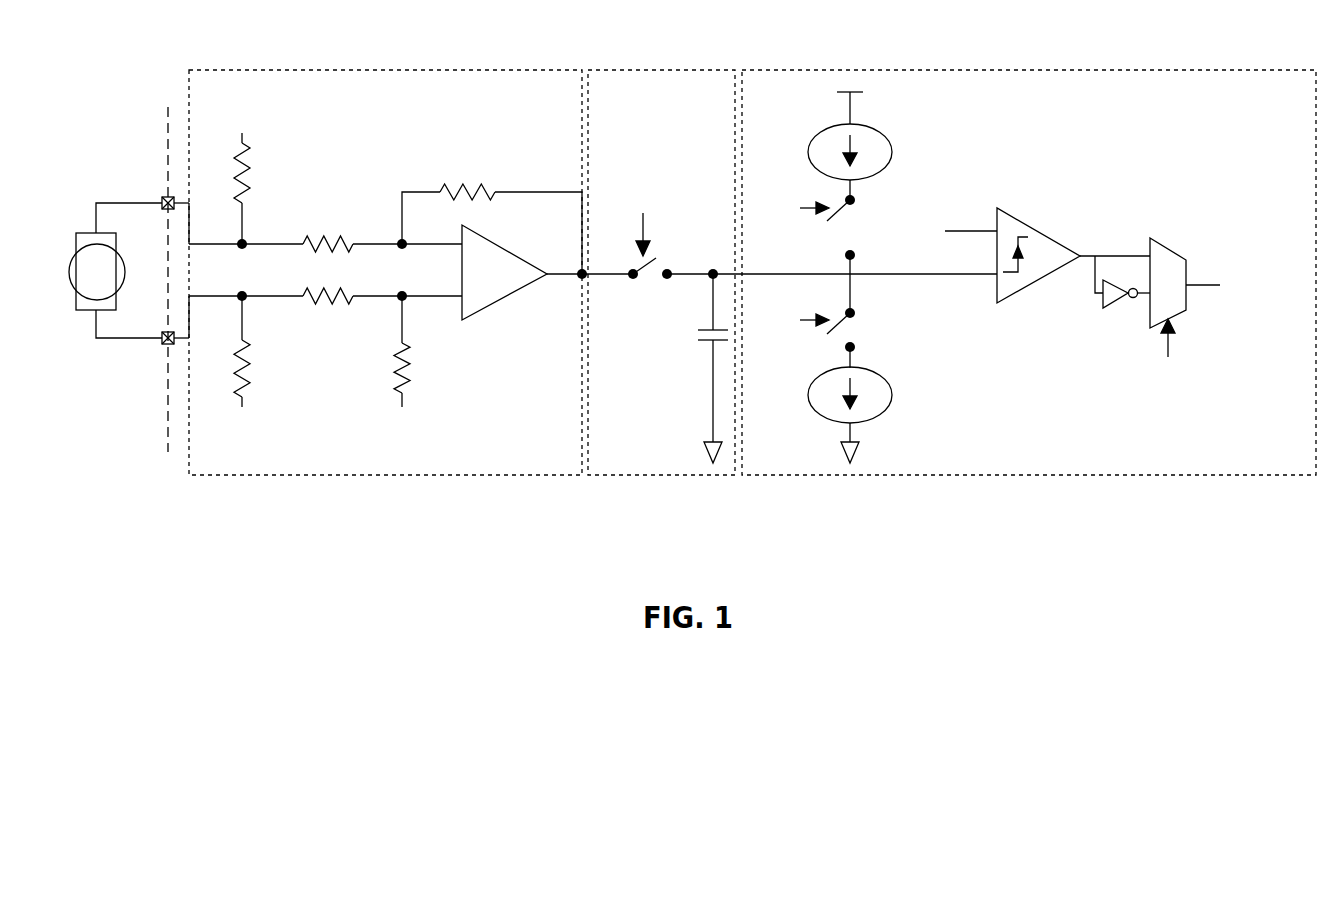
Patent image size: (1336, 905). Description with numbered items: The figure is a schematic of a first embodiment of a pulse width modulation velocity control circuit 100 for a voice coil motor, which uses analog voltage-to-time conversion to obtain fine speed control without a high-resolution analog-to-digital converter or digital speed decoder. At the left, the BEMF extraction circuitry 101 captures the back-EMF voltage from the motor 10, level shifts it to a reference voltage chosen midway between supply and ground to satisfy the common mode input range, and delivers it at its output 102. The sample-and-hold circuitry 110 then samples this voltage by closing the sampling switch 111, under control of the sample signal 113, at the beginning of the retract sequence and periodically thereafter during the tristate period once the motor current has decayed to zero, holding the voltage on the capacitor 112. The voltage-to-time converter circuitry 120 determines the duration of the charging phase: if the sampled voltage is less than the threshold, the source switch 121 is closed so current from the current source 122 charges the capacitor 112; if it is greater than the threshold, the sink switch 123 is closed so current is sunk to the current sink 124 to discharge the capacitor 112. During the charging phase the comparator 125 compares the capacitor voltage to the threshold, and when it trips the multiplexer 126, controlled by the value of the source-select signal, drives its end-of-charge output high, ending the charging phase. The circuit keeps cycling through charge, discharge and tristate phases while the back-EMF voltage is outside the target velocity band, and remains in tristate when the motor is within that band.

The motor 10 is at (68, 270).
The pulse width modulation velocity control circuit 100 is at (1312, 482).
The BEMF extraction circuitry 101 is at (240, 70).
The output of BEMF extraction circuitry 102 is at (574, 278).
The sample-and-hold circuitry 110 is at (598, 70).
The sampling switch 111 is at (650, 279).
The CBEMF capacitor 112 is at (708, 348).
The sample signal 113 is at (647, 222).
The voltage-to-time converter circuitry 120 is at (750, 70).
The SRC switch 121 is at (850, 221).
The ISRC current source 122 is at (867, 124).
The SNK switch 123 is at (847, 331).
The ISINK current sink 124 is at (870, 368).
The comparator 125 is at (1033, 284).
The multiplexer 126 is at (1182, 240).